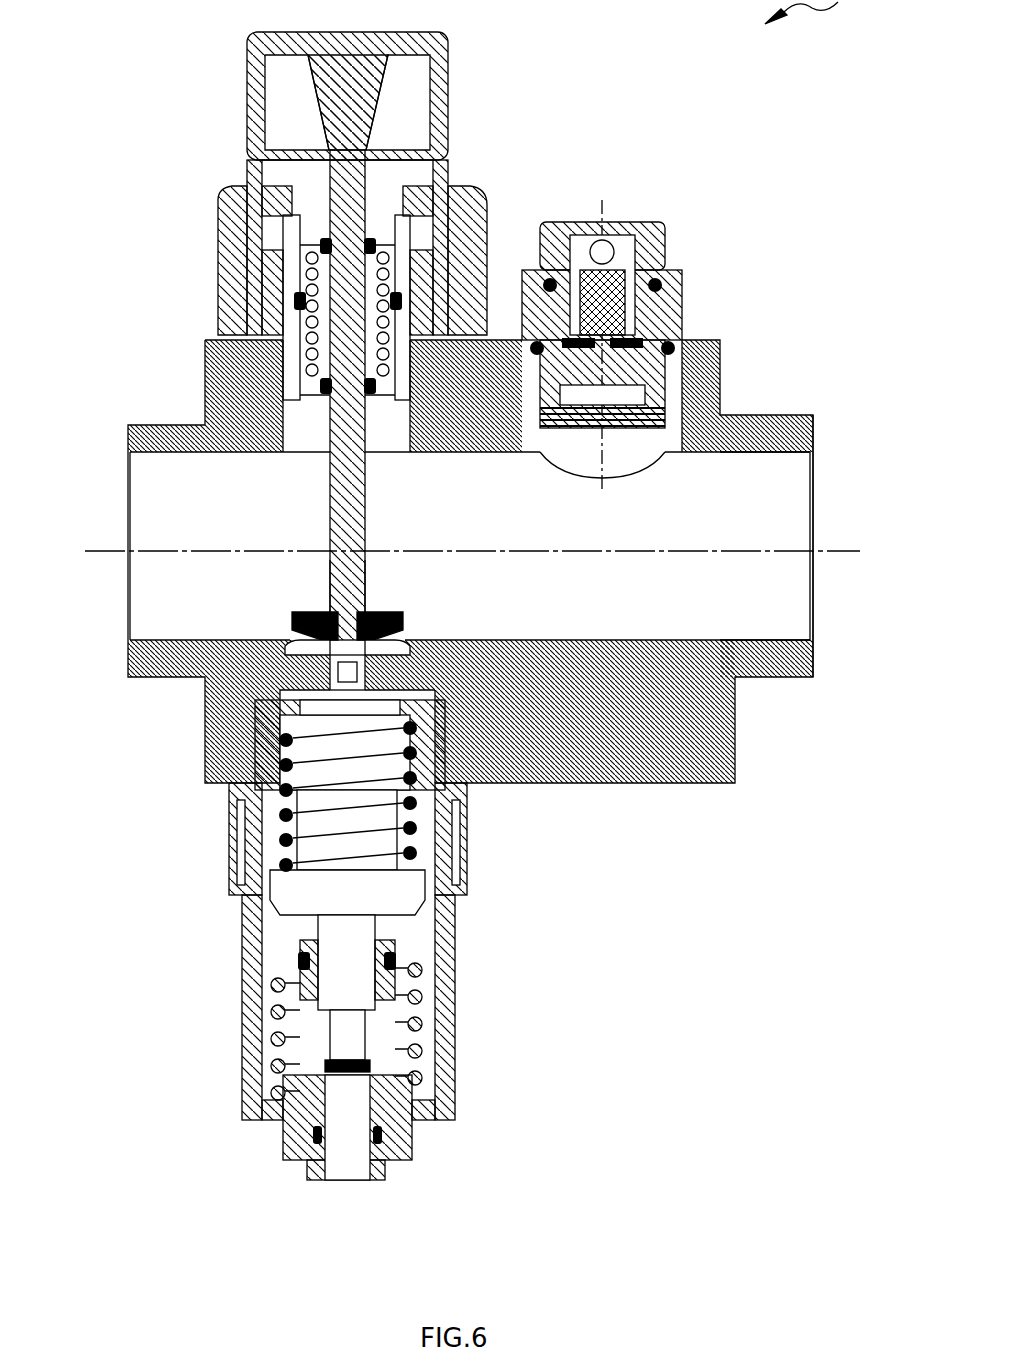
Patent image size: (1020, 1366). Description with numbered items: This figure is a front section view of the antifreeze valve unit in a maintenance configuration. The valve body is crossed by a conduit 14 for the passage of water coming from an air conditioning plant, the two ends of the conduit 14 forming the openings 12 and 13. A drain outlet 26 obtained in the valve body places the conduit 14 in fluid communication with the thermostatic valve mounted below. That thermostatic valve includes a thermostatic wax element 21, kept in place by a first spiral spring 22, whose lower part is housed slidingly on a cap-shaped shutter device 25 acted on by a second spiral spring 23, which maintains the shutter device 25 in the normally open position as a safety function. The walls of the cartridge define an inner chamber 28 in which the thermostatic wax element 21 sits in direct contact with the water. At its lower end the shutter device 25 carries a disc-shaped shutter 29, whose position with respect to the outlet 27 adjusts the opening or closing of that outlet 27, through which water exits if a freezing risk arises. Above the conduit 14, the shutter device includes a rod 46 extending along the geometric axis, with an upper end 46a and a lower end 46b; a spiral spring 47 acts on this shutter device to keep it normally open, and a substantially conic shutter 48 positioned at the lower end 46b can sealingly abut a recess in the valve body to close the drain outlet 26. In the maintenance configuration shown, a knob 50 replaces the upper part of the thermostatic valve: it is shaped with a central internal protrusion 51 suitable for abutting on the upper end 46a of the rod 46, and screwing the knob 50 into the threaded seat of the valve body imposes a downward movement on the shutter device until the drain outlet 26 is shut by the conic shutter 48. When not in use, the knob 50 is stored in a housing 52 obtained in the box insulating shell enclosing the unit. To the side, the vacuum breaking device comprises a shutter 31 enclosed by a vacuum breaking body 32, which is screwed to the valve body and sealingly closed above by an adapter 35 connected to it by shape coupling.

The opening 12 is at (128, 540).
The opening 13 is at (813, 538).
The conduit 14 is at (700, 510).
The thermostatic wax element 21 is at (300, 850).
The first spiral spring 22 is at (285, 815).
The second spiral spring 23 is at (278, 1050).
The cap-shaped shutter device 25 is at (245, 960).
The drain outlet 26 is at (290, 712).
The outlet 27 is at (350, 1185).
The inner chamber 28 is at (400, 940).
The disc-shaped shutter 29 is at (335, 1068).
The shutter 31 is at (610, 300).
The vacuum breaking body 32 is at (682, 320).
The adapter 35 is at (565, 222).
The rod 46 is at (345, 490).
The upper end of the rod 46a is at (305, 240).
The lower end of the rod 46b is at (340, 590).
The spiral spring 47 is at (270, 290).
The conic shutter 48 is at (300, 615).
The knob 50 is at (448, 100).
The central internal protrusion 51 is at (330, 145).
The housing 52 is at (235, 300).